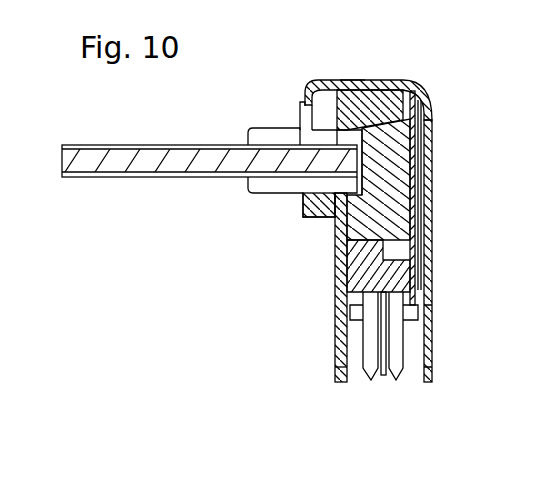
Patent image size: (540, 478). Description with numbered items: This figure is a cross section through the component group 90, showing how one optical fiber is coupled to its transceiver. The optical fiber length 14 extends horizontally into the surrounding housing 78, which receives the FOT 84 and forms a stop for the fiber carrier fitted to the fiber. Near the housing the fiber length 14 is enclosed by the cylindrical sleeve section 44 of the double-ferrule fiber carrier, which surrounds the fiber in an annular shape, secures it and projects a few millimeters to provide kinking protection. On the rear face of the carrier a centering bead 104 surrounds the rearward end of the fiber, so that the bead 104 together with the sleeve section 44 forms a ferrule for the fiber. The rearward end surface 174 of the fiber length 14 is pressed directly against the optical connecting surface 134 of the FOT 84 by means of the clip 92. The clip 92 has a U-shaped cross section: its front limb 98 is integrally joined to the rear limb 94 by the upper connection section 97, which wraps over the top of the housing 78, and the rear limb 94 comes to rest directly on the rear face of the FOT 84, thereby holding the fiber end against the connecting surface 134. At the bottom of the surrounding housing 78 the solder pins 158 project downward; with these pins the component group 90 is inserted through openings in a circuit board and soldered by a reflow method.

The fiber length 14 is at (180, 177).
The cylindrical sleeve section 44 is at (247, 128).
The front limb 98 is at (302, 102).
The clip 92 is at (407, 80).
The upper connection section 97 is at (352, 80).
The centering bead 104 is at (347, 118).
The rearward end surface 174 is at (422, 148).
The rear limb 94 is at (415, 172).
The component group 90 is at (432, 183).
The surrounding housing 78 is at (428, 232).
The FOT 84 is at (333, 235).
The optical connecting surface 134 is at (302, 212).
The solder pins 158 is at (334, 375).